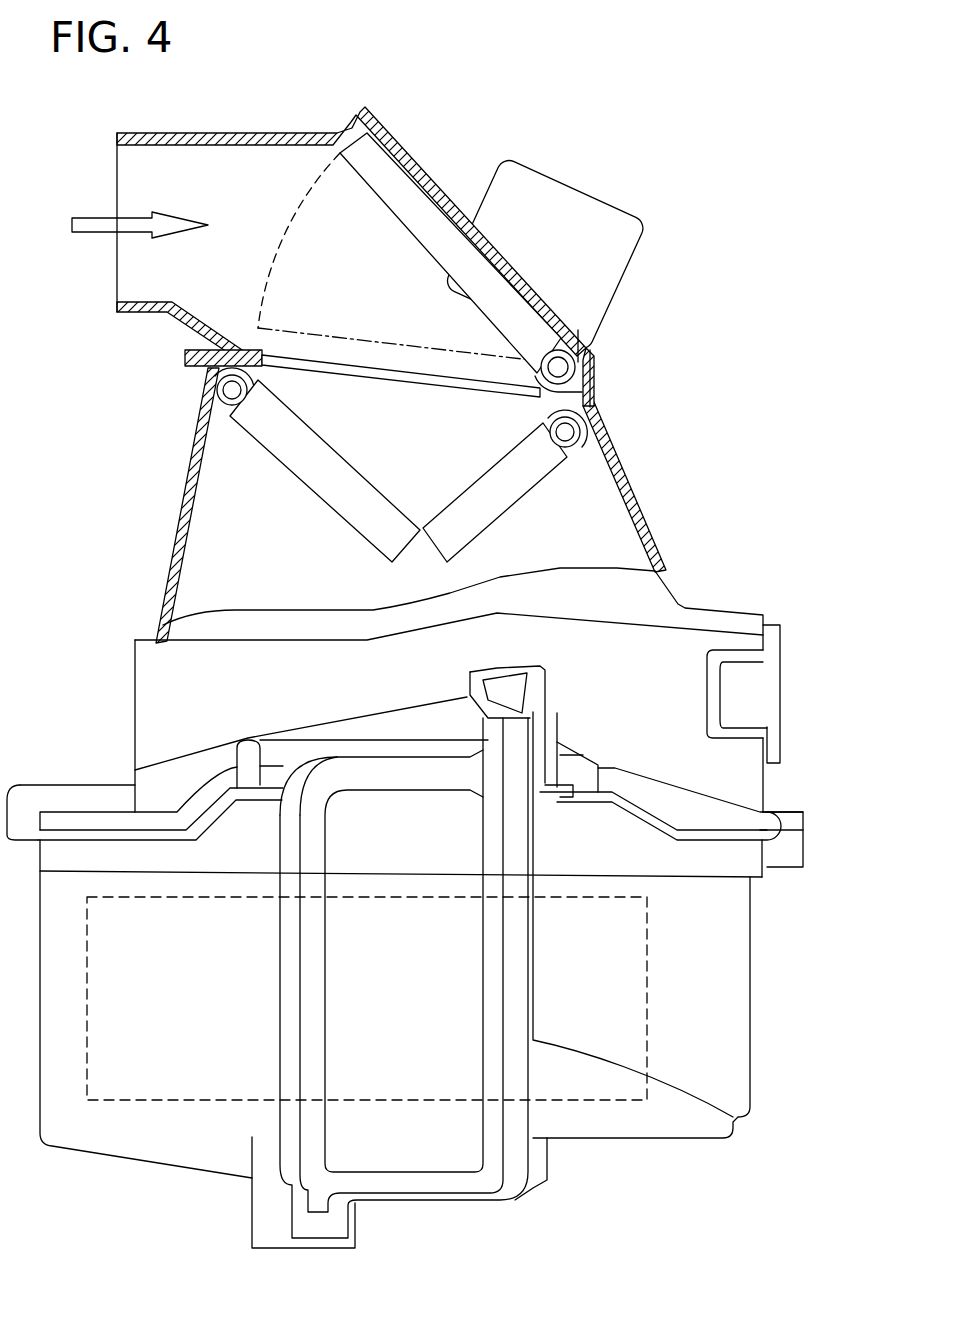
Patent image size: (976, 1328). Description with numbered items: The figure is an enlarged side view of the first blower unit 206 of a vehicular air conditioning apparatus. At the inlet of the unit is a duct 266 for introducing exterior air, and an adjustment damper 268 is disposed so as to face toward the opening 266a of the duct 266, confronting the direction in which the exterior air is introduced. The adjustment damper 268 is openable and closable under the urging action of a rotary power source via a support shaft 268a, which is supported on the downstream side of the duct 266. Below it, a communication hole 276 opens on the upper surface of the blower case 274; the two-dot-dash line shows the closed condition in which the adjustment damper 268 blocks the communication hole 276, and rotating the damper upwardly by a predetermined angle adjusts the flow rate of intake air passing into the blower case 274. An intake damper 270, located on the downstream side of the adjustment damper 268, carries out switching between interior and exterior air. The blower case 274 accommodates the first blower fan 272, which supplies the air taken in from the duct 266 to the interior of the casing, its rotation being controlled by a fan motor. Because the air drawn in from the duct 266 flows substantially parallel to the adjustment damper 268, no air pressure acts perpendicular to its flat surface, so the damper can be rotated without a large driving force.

The first blower unit 206 is at (668, 1168).
The duct 266 is at (143, 318).
The opening of the duct 266a is at (133, 172).
The adjustment damper 268 is at (420, 212).
The support shaft 268a is at (562, 369).
The intake damper 270 is at (332, 487).
The first blower fan 272 is at (403, 1080).
The blower case 274 is at (720, 947).
The communication hole 276 is at (450, 382).